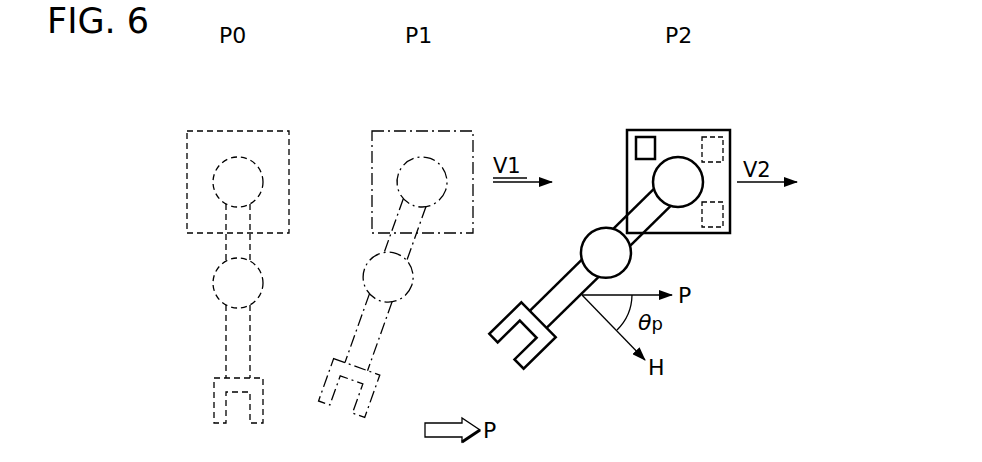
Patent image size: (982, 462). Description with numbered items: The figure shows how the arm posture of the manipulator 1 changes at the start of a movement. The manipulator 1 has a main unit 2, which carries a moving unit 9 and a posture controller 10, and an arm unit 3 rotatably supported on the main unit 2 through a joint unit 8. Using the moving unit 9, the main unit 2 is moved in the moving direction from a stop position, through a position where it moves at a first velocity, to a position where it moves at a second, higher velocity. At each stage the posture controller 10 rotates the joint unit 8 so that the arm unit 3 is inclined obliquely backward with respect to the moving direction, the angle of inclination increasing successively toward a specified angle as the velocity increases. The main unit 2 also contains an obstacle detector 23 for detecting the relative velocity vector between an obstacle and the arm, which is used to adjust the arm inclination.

The manipulator 1 is at (727, 103).
The main unit 2 is at (673, 129).
The arm unit 3 is at (643, 170).
The joint unit 8 is at (681, 198).
The moving unit 9 is at (718, 217).
The posture controller 10 is at (716, 147).
The obstacle detector 23 is at (645, 134).